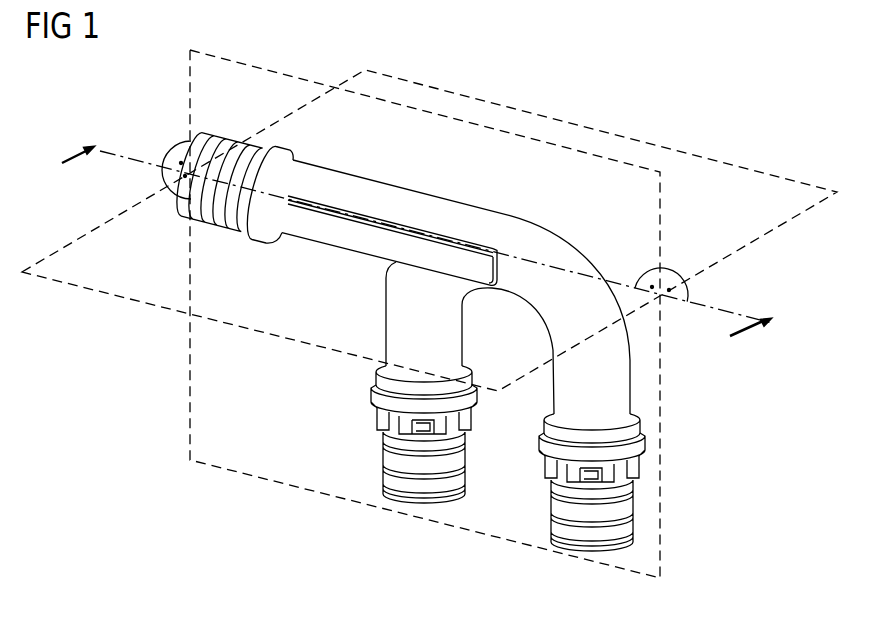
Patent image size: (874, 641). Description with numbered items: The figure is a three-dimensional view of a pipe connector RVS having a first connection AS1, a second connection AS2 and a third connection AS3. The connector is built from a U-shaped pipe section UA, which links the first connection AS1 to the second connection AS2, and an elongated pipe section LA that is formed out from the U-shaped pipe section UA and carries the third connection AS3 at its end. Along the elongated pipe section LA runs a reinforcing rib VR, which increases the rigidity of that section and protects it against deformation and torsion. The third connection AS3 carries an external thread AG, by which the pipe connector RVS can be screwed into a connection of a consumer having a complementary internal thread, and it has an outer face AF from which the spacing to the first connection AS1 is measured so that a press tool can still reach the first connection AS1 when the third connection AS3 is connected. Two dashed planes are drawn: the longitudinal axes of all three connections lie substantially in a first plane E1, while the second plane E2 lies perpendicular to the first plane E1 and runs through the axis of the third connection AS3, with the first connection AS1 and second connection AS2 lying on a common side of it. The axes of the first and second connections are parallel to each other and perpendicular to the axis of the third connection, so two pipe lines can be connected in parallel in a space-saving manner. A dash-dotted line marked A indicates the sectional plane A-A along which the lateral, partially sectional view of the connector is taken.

The pipe connector RVS is at (765, 82).
The first plane E1 is at (303, 80).
The second plane E2 is at (437, 88).
The sectional plane A- A is at (406, 255).
The outer face AF is at (693, 283).
The external thread AG is at (242, 123).
The first connection AS1 is at (396, 420).
The second connection AS2 is at (565, 485).
The third connection AS3 is at (196, 171).
The elongated pipe section LA is at (344, 155).
The U-shaped pipe section UA is at (573, 226).
The reinforcing rib VR is at (290, 236).